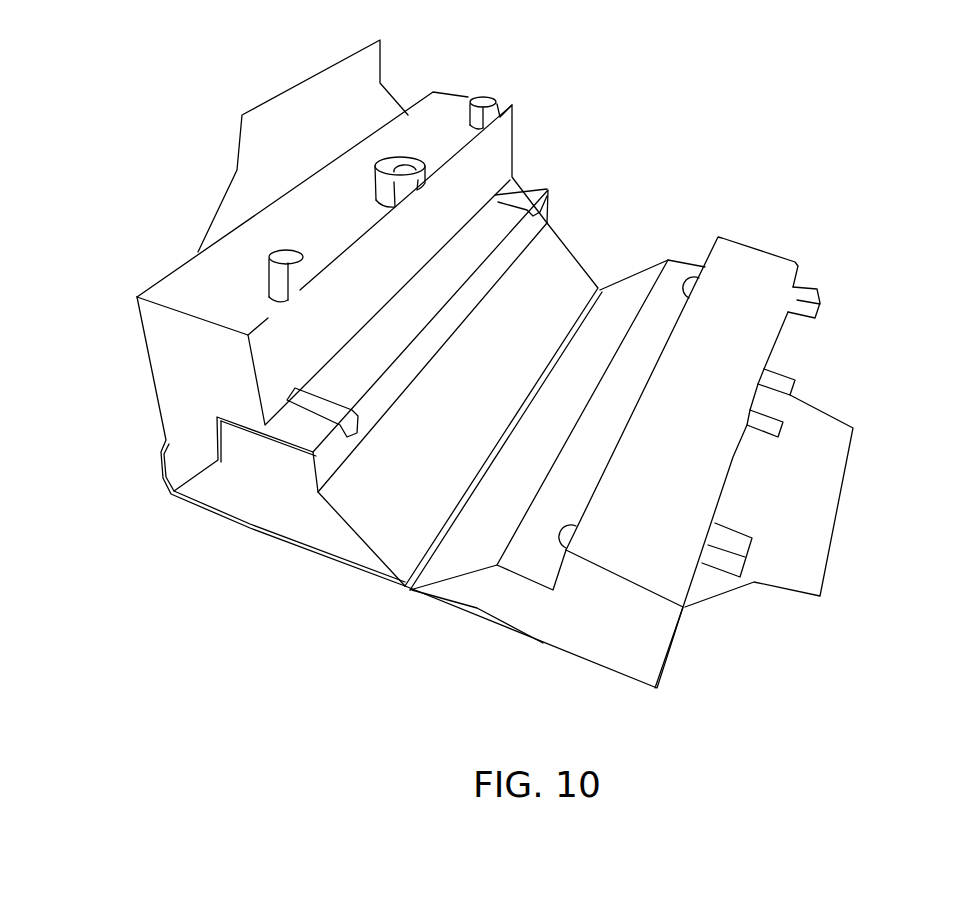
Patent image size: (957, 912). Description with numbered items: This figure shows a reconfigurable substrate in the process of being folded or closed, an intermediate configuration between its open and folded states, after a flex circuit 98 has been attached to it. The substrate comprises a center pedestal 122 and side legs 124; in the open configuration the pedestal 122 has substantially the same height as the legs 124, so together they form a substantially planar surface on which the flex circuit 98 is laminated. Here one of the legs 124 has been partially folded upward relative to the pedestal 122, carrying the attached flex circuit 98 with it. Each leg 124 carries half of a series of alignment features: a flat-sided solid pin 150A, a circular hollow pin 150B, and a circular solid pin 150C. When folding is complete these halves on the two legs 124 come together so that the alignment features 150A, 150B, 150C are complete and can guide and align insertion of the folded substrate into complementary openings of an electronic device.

The flex circuit 98 is at (240, 192).
The center pedestal 122 is at (237, 505).
The side legs 124 is at (500, 158).
The flat-sided solid pin alignment feature 150A is at (268, 280).
The circular hollow pin alignment feature 150B is at (390, 163).
The circular solid pin alignment feature 150C is at (487, 97).